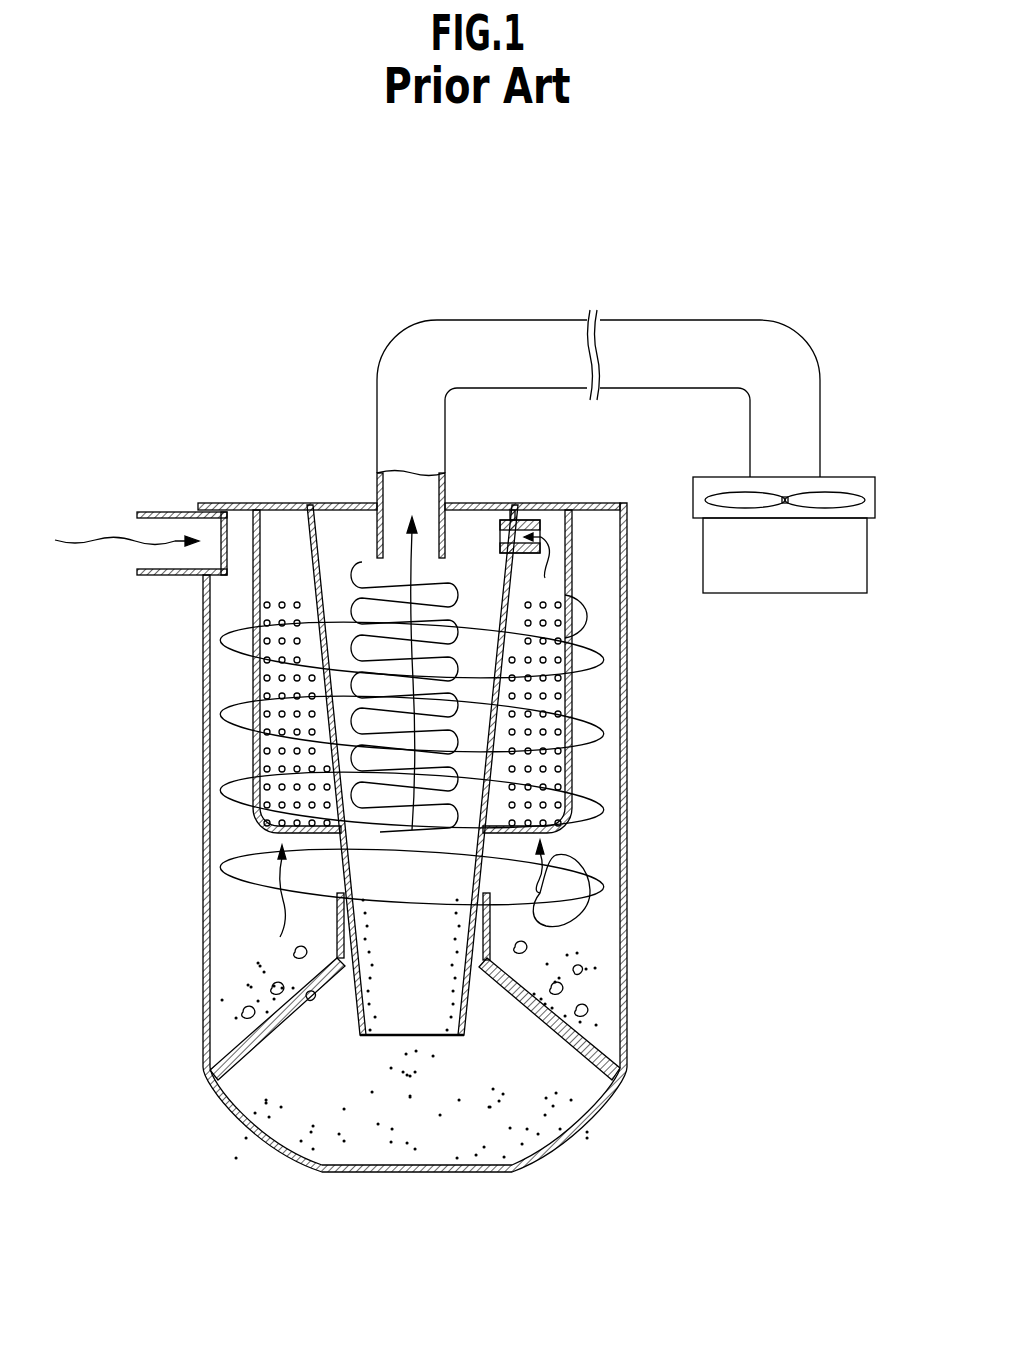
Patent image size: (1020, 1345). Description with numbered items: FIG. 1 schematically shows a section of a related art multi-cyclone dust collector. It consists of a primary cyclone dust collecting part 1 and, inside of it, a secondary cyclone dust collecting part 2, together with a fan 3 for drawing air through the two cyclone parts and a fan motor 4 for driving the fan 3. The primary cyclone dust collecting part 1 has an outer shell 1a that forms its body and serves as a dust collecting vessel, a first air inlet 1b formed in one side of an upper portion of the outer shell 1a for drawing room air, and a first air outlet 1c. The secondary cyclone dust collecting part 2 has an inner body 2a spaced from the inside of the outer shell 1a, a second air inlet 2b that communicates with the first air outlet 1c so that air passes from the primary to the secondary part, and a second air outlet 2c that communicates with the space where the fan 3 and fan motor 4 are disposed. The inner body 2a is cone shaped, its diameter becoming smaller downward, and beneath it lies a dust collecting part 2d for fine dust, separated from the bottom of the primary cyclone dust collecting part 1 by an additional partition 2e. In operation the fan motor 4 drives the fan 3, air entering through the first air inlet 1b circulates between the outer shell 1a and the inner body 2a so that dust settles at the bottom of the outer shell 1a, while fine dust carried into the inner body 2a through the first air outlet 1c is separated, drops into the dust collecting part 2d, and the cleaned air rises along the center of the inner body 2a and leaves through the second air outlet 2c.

The primary cyclone dust collecting part 1 is at (341, 837).
The outer shell 1a is at (203, 698).
The first air inlet 1b is at (170, 575).
The first air outlet 1c is at (253, 592).
The secondary cyclone dust collecting part 2 is at (496, 792).
The inner body 2a is at (490, 766).
The second air inlet 2b is at (572, 628).
The second air outlet 2c is at (540, 690).
The dust collecting part 2d is at (533, 1027).
The partition 2e is at (570, 1030).
The fan 3 is at (870, 490).
The fan motor 4 is at (858, 556).